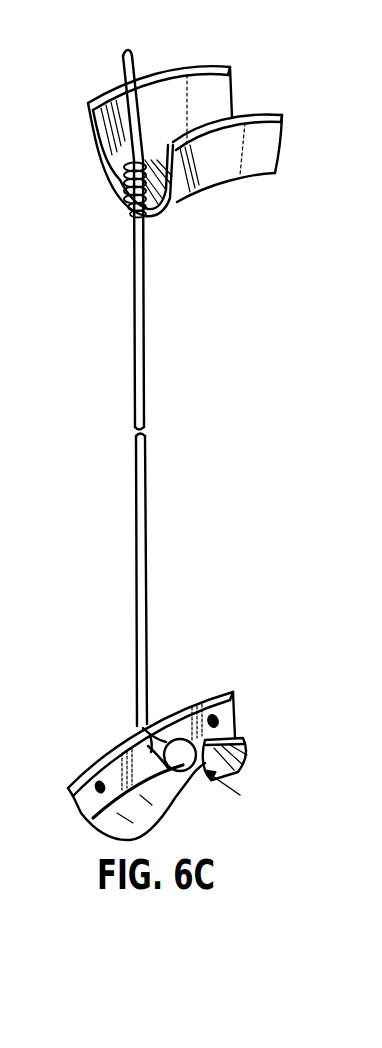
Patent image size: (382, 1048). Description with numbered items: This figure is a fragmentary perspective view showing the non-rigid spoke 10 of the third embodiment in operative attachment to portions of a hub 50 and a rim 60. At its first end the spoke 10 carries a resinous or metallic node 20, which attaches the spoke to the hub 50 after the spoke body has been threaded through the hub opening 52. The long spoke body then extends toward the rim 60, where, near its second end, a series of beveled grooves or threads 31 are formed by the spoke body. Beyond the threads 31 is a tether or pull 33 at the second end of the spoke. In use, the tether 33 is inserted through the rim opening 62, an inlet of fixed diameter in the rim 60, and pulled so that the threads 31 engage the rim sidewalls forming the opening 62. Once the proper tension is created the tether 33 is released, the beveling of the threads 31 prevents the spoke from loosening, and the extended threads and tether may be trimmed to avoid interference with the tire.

The spoke 10 is at (144, 462).
The node 20 is at (188, 779).
The threads 31 is at (118, 189).
The tether 33 is at (134, 62).
The hub 50 is at (234, 743).
The hub opening 52 is at (214, 718).
The rim 60 is at (249, 178).
The rim opening 62 is at (127, 201).